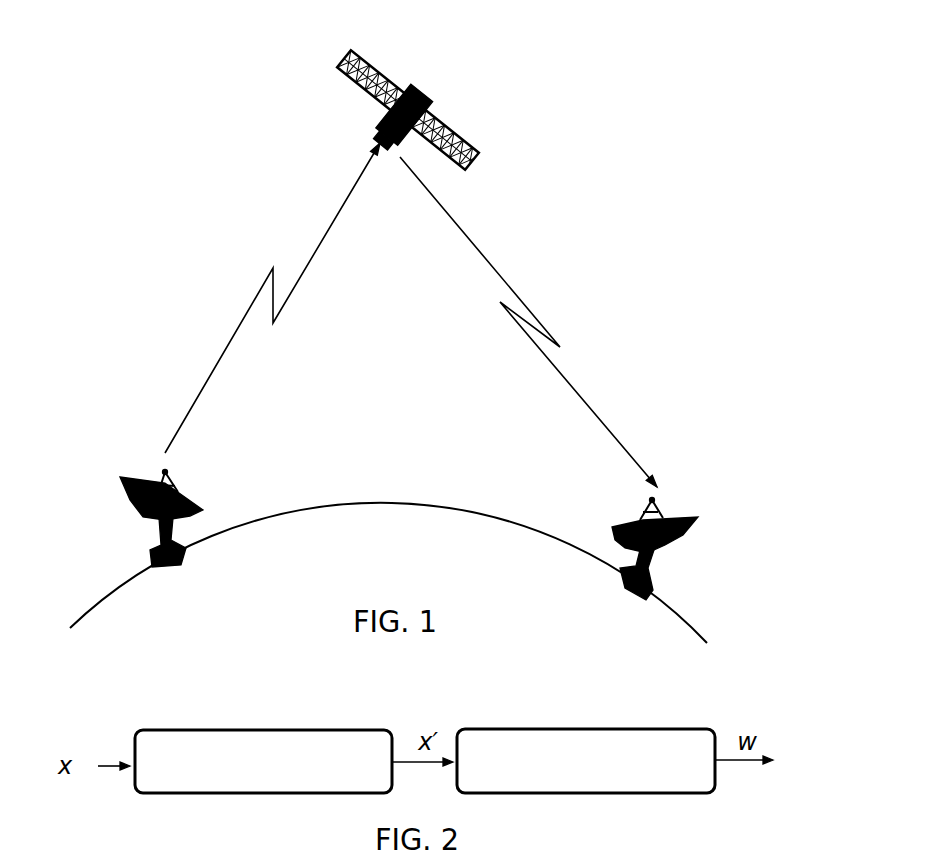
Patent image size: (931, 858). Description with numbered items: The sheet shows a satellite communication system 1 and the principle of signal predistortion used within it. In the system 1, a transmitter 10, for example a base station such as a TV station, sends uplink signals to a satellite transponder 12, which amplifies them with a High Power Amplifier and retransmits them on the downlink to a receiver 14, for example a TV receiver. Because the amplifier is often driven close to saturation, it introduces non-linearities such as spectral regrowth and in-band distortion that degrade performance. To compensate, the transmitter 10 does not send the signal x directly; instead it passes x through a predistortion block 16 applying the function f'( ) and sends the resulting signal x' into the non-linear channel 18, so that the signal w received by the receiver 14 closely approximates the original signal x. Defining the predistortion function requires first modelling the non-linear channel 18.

In FIG. 1, the satellite communication system 1 is at (538, 238).
In FIG. 1, the transmitter 10 is at (193, 482).
In FIG. 1, the satellite transponder 12 is at (433, 93).
In FIG. 1, the receiver 14 is at (682, 505).
In FIG. 2, the predistortion block 16 is at (230, 733).
In FIG. 2, the non-linear channel 18 is at (607, 730).